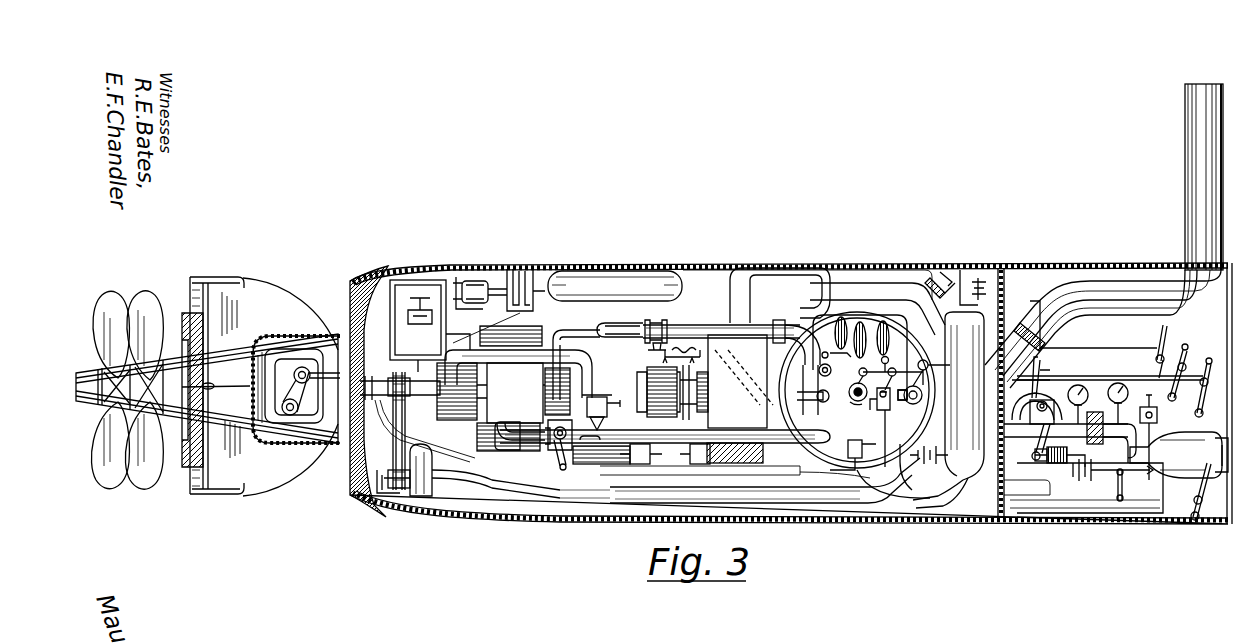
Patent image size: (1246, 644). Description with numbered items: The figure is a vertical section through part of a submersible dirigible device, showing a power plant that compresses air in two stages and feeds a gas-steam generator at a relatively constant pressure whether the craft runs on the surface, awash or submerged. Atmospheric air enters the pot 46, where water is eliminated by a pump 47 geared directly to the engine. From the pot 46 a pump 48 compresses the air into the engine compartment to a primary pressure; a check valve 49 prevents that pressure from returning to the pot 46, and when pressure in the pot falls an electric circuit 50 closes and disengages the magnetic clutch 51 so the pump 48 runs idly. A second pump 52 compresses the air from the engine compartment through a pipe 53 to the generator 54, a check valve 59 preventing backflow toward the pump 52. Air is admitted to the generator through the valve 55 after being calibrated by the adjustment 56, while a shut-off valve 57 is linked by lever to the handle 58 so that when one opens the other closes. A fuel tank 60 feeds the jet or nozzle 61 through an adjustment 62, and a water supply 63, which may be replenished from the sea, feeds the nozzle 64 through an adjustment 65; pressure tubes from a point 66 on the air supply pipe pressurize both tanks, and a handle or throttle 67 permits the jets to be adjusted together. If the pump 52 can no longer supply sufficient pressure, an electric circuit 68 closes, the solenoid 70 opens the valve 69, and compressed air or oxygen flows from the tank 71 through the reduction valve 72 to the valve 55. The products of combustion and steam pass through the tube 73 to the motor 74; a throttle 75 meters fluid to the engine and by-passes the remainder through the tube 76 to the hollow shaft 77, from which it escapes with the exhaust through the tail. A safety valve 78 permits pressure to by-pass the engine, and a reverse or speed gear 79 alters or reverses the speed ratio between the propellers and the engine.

The pot 46 is at (1067, 389).
The pump 47 is at (433, 492).
The pump 48 is at (705, 399).
The check valve 49 is at (932, 262).
The electric circuit 50 is at (953, 292).
The magnetic clutch 51 is at (698, 345).
The pump 52 is at (604, 401).
The pipe 53 is at (767, 335).
The generator 54 is at (857, 390).
The valve 55 is at (850, 380).
The adjustment 56 is at (853, 399).
The shut-off valve 57 is at (827, 364).
The handle 58 is at (1041, 408).
The check valve 59 is at (812, 337).
The fuel tank 60 is at (615, 286).
The jet or nozzle 61 is at (913, 395).
The adjustment 62 is at (930, 385).
The water supply 63 is at (455, 326).
The nozzle 64 is at (530, 274).
The adjustment 65 is at (877, 427).
The point on supply pipe 66 is at (818, 400).
The handle or throttle 67 is at (1183, 367).
The electric circuit 68 is at (653, 338).
The valve 69 is at (1058, 470).
The solenoid 70 is at (1058, 456).
The tank 71 is at (1179, 437).
The reduction valve 72 is at (1098, 445).
The tube 73 is at (630, 438).
The motor 74 is at (506, 388).
The valve or throttle 75 is at (557, 448).
The tube 76 is at (496, 366).
The hollow shaft 77 is at (347, 374).
The safety valve 78 is at (566, 352).
The reverse or speed gear 79 is at (292, 372).